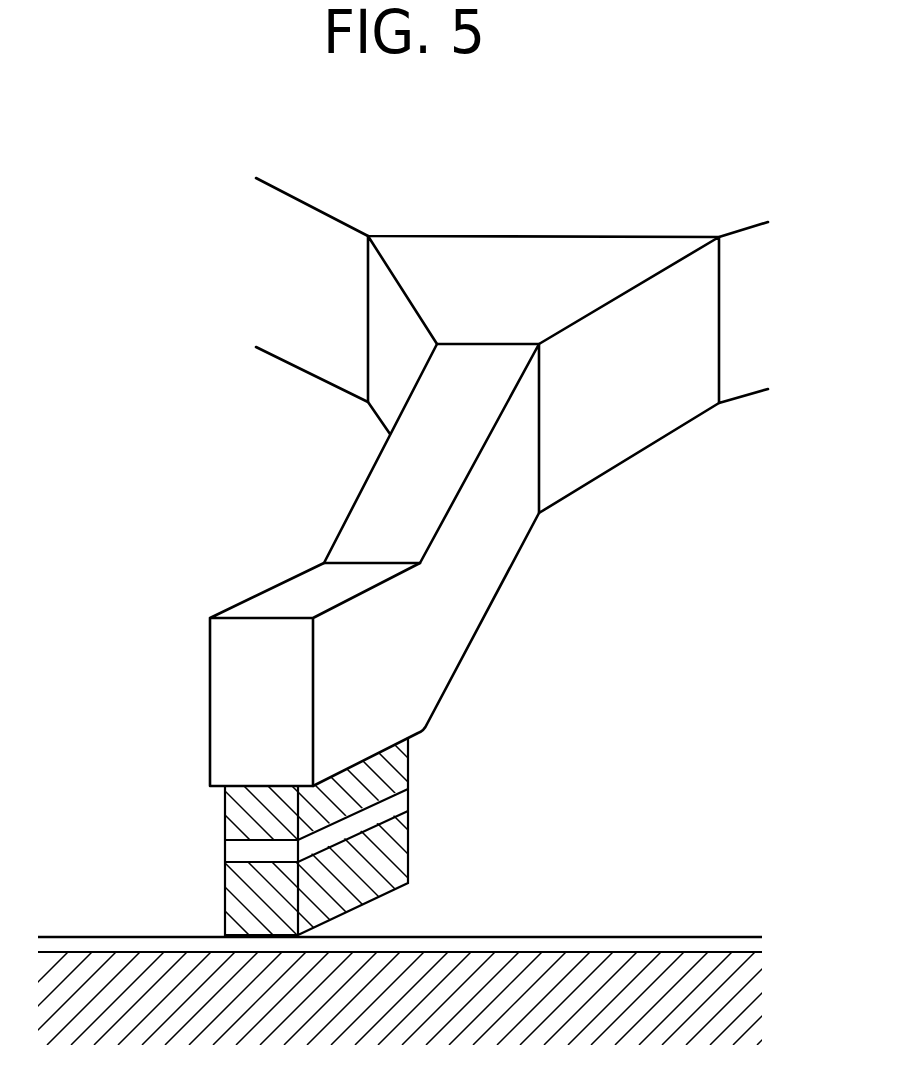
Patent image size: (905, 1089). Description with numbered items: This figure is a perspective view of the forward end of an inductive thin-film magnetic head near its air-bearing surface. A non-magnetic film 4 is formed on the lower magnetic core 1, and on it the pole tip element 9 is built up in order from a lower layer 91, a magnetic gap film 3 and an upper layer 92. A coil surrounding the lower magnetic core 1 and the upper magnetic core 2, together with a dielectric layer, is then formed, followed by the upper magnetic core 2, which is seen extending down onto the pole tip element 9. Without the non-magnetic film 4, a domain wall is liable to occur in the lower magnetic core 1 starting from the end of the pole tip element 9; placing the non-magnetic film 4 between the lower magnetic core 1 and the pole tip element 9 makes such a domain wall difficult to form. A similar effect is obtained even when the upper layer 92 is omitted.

The lower magnetic core 1 is at (675, 967).
The upper magnetic core 2 is at (357, 535).
The magnetic gap film 3 is at (233, 851).
The non-magnetic film 4 is at (88, 943).
The pole tip element 9 is at (322, 838).
The lower layer of the pole tip element 91 is at (393, 847).
The upper layer of the pole tip element 92 is at (393, 775).